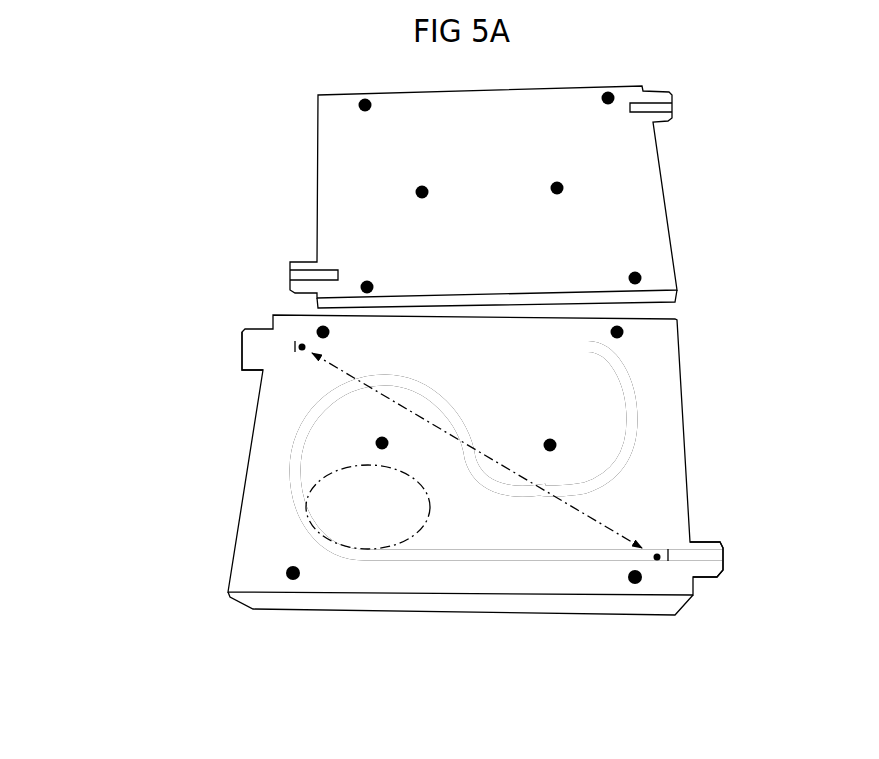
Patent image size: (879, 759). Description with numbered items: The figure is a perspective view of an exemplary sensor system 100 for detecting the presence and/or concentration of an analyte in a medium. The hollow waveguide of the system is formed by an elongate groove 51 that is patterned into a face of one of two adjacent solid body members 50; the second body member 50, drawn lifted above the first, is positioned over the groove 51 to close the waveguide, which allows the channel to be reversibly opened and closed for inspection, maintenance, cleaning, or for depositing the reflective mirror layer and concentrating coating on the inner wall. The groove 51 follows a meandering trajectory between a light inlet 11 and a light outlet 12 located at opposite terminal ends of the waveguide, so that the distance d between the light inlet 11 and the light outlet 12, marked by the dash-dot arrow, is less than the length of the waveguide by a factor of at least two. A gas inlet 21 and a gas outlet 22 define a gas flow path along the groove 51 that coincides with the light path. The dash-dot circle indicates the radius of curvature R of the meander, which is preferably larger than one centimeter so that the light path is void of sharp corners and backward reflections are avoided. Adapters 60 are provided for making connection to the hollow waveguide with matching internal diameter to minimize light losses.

The sensor system 100 is at (150, 138).
The solid body member 50 is at (303, 192).
The groove 51 is at (622, 388).
The light inlet 11 is at (238, 345).
The light outlet 12 is at (687, 557).
The gas inlet 21 is at (293, 338).
The gas outlet 22 is at (665, 550).
The adapter 60 is at (625, 582).
The distance d is at (477, 450).
The radius of curvature R is at (330, 536).